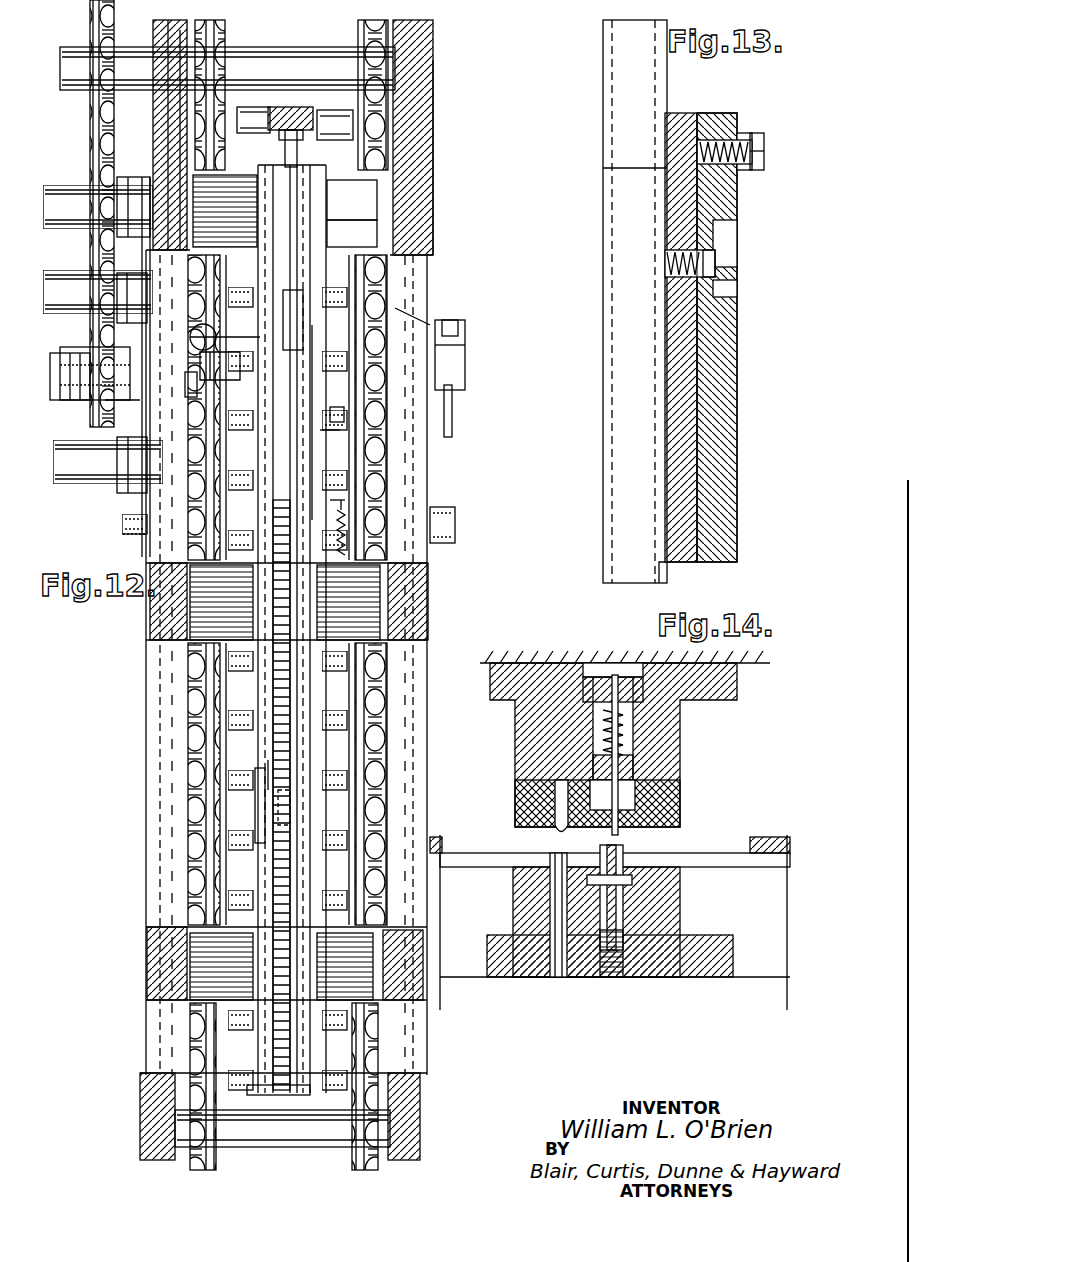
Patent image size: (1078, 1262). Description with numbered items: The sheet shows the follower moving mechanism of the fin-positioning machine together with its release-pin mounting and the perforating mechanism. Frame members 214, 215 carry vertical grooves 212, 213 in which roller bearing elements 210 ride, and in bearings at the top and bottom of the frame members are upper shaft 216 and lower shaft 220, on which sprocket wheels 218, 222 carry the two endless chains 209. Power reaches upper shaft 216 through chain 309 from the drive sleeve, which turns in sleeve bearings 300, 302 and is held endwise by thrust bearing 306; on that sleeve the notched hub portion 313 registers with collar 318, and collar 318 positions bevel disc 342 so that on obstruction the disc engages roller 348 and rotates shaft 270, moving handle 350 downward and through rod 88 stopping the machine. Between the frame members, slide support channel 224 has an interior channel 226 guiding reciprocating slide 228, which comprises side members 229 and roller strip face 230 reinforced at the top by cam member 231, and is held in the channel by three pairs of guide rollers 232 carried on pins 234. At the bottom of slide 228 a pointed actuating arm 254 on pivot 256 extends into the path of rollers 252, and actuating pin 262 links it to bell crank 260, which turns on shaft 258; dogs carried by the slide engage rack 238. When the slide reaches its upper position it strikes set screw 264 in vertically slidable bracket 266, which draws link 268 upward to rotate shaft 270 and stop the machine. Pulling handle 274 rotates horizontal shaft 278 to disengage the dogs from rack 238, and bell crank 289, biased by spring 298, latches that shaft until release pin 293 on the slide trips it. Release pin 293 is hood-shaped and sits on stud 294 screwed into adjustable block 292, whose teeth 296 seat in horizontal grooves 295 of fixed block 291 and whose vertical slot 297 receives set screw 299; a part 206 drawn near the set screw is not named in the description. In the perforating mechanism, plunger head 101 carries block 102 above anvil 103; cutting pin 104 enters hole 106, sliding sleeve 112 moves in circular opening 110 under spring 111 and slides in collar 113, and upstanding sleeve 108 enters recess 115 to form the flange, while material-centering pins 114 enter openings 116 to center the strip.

In FIG. 12, the rod 88 is at (452, 415).
In FIG. 14, the plunger head 101 is at (565, 660).
In FIG. 14, the block 102 is at (512, 760).
In FIG. 14, the anvil 103 is at (660, 865).
In FIG. 14, the cutting pin 104 is at (618, 828).
In FIG. 14, the hole 106 is at (618, 850).
In FIG. 14, the upstanding sleeve 108 is at (605, 856).
In FIG. 14, the circular opening 110 is at (635, 745).
In FIG. 14, the spring 111 is at (620, 722).
In FIG. 14, the sliding sleeve 112 is at (635, 772).
In FIG. 14, the collar 113 is at (625, 805).
In FIG. 14, the material-centering pins 114 is at (558, 832).
In FIG. 14, the recess 115 is at (607, 825).
In FIG. 14, the openings 116 is at (560, 860).
In FIG. 12, the screw head 206 is at (318, 112).
In FIG. 12, the endless chains 209 is at (185, 690).
In FIG. 12, the roller bearing elements 210 is at (433, 203).
In FIG. 12, the vertical groove 212 is at (165, 160).
In FIG. 12, the vertical groove 213 is at (433, 149).
In FIG. 12, the frame member 214 is at (162, 100).
In FIG. 12, the frame member 215 is at (433, 102).
In FIG. 12, the upper shaft 216 is at (305, 44).
In FIG. 12, the sprocket wheels 218 is at (215, 60).
In FIG. 12, the lower shaft 220 is at (300, 1125).
In FIG. 12, the sprocket wheels 222 is at (200, 1150).
In FIG. 12, the slide support channel 224 is at (305, 212).
In FIG. 12, the interior channel 226 is at (260, 585).
In FIG. 12, the reciprocating slide 228 is at (300, 625).
In FIG. 13, the reciprocating slide 228 is at (600, 185).
In FIG. 13, the side members 229 is at (602, 565).
In FIG. 13, the roller strip face 230 is at (620, 520).
In FIG. 12, the cam member 231 is at (295, 350).
In FIG. 13, the cam member 231 is at (625, 70).
In FIG. 12, the guide rollers 232 is at (272, 432).
In FIG. 12, the pins 234 is at (262, 435).
In FIG. 12, the rack 238 is at (275, 970).
In FIG. 12, the rollers 252 is at (268, 112).
In FIG. 12, the pointed actuating arm 254 is at (255, 805).
In FIG. 12, the pivot 256 is at (268, 760).
In FIG. 12, the shaft 258 is at (282, 845).
In FIG. 12, the bell crank 260 is at (290, 825).
In FIG. 12, the actuating pin 262 is at (290, 795).
In FIG. 12, the set screw 264 is at (292, 112).
In FIG. 12, the vertically slidable bracket 266 is at (298, 145).
In FIG. 12, the link 268 is at (335, 256).
In FIG. 12, the shaft 270 is at (395, 308).
In FIG. 12, the handle 274 is at (130, 528).
In FIG. 12, the horizontal shaft 278 is at (190, 525).
In FIG. 12, the bell crank 289 is at (333, 560).
In FIG. 12, the fixed block 291 is at (303, 410).
In FIG. 13, the fixed block 291 is at (683, 130).
In FIG. 12, the adjustable block 292 is at (345, 450).
In FIG. 13, the adjustable block 292 is at (715, 445).
In FIG. 12, the release pin 293 is at (345, 400).
In FIG. 13, the release pin 293 is at (764, 147).
In FIG. 13, the stud 294 is at (737, 120).
In FIG. 13, the horizontal grooves 295 is at (665, 300).
In FIG. 13, the teeth 296 is at (700, 318).
In FIG. 13, the vertical slot 297 is at (720, 295).
In FIG. 12, the spring 298 is at (340, 520).
In FIG. 13, the set screw 299 is at (725, 260).
In FIG. 12, the sleeve bearing 300 is at (65, 285).
In FIG. 12, the sleeve bearing 302 is at (115, 400).
In FIG. 12, the thrust bearing 306 is at (190, 383).
In FIG. 12, the chain 309 is at (90, 140).
In FIG. 12, the hub portion 313 is at (75, 400).
In FIG. 12, the collar 318 is at (55, 370).
In FIG. 12, the bevel disc 342 is at (205, 362).
In FIG. 12, the roller 348 is at (195, 330).
In FIG. 12, the handle 350 is at (450, 325).